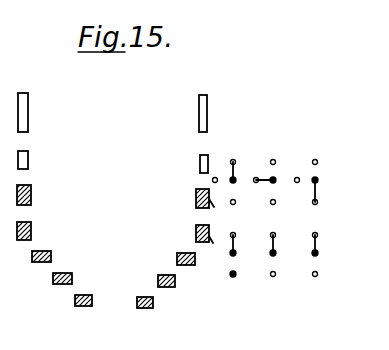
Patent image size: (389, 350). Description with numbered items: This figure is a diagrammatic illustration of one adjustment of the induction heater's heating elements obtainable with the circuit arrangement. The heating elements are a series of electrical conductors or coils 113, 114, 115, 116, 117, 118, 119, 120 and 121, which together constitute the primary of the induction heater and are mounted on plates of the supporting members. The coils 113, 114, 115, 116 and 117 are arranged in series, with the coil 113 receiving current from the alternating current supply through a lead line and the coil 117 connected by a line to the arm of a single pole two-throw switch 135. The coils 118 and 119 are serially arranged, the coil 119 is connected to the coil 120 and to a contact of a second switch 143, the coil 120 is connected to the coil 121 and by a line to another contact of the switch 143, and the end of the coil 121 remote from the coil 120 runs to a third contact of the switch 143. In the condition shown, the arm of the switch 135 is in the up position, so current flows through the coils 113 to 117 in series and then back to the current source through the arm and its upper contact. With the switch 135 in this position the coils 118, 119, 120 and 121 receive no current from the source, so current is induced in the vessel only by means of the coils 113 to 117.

The coil 113 is at (147, 295).
The coil 114 is at (162, 274).
The coil 115 is at (177, 257).
The coil 116 is at (196, 228).
The coil 117 is at (196, 193).
The coil 118 is at (218, 260).
The coil 119 is at (224, 212).
The coil 120 is at (200, 159).
The coil 121 is at (199, 110).
The single pole two-throw switch 135 is at (235, 243).
The switch 143 is at (235, 170).